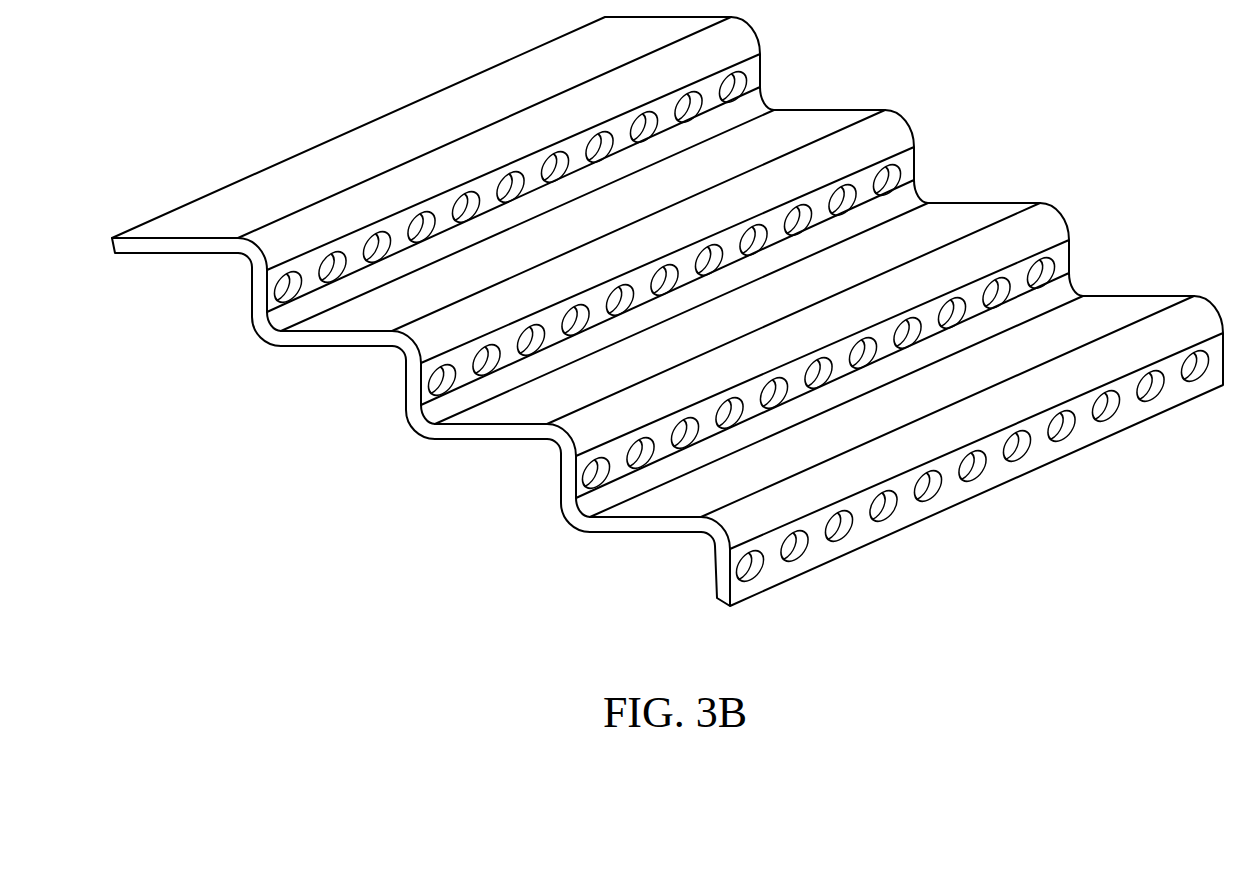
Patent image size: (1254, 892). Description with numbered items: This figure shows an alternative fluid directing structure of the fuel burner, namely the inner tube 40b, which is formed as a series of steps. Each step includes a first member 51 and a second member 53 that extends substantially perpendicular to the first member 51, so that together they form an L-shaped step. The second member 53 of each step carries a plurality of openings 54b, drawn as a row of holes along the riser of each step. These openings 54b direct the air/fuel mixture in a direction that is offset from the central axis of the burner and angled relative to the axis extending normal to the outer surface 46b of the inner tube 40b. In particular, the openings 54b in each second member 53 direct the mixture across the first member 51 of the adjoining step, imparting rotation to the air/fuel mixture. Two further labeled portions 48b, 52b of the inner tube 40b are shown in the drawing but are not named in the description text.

The inner tube 40b is at (667, 311).
The outer surface 46b is at (330, 349).
The upper flat portion 48b is at (362, 138).
The first member 51 is at (145, 258).
The perforated riser wall 52b is at (946, 176).
The second member 53 is at (251, 300).
The openings 54b is at (1153, 406).